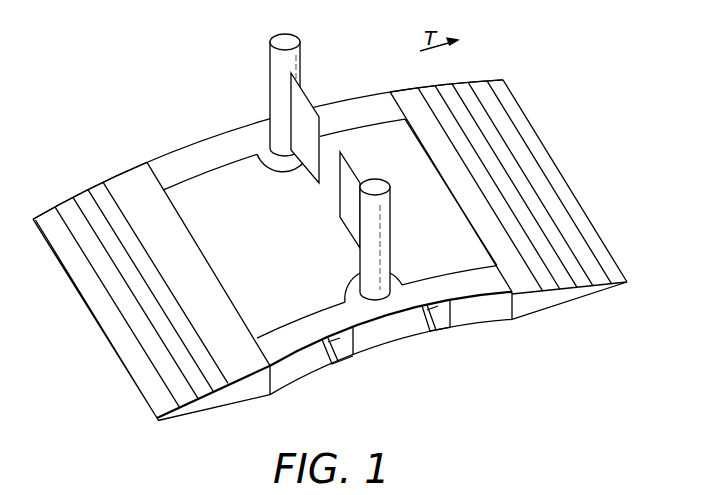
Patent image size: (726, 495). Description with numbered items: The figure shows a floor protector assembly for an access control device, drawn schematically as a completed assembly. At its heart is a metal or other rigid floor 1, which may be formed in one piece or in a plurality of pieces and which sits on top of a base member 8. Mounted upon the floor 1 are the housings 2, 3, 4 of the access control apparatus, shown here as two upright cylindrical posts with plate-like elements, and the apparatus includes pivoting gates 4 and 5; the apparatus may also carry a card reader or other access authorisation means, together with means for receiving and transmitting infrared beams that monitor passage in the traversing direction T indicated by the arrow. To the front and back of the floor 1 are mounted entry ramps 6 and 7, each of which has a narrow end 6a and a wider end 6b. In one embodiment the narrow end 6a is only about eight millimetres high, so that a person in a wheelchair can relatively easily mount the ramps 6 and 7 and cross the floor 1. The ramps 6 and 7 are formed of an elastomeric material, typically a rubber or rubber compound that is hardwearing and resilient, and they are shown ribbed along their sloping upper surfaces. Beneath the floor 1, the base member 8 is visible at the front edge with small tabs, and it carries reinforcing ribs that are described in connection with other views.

The floor 1 is at (353, 98).
The housing 2 is at (272, 78).
The housing 3 is at (388, 230).
The pivoting gate 4 is at (310, 162).
The pivoting gate 5 is at (340, 212).
The entry ramp 6 is at (98, 185).
The narrow end 6a is at (157, 423).
The wider end 6b is at (250, 382).
The entry ramp 7 is at (577, 300).
The base member 8 is at (397, 342).